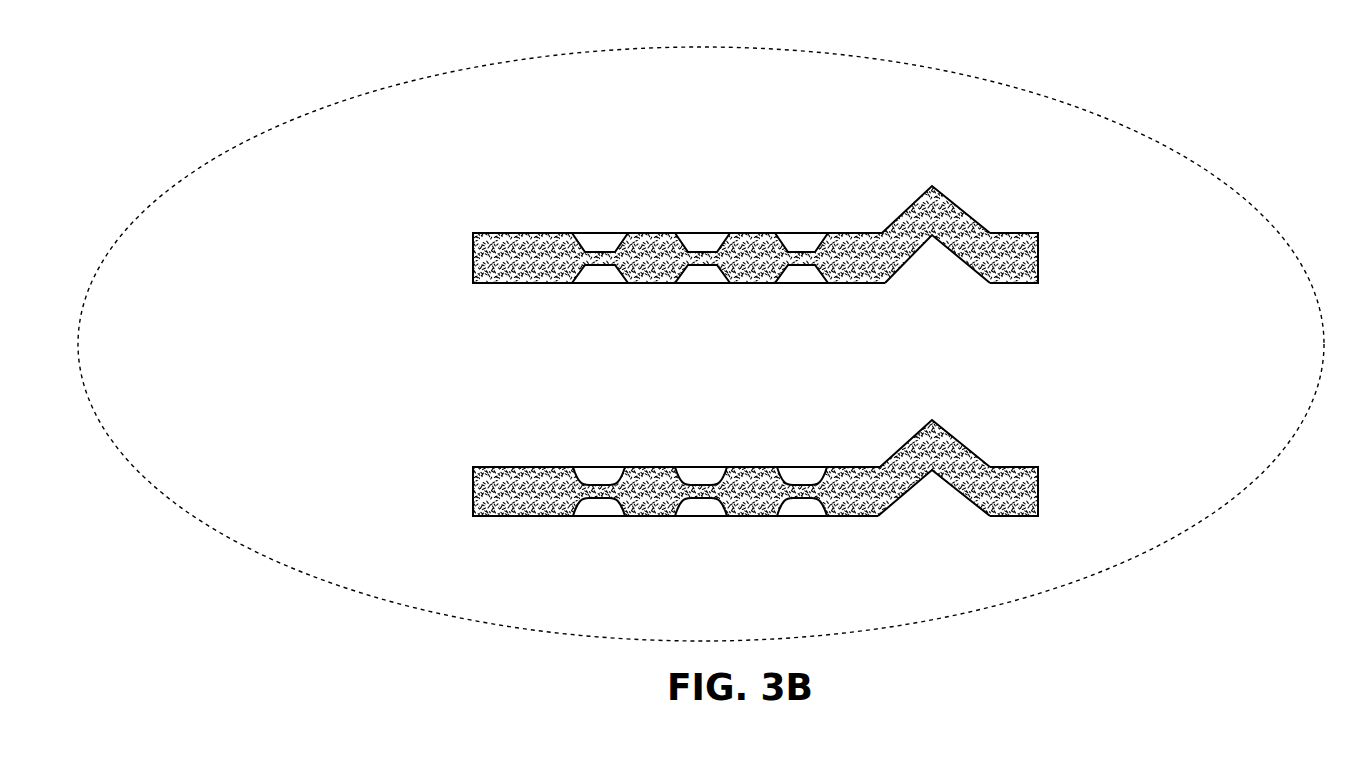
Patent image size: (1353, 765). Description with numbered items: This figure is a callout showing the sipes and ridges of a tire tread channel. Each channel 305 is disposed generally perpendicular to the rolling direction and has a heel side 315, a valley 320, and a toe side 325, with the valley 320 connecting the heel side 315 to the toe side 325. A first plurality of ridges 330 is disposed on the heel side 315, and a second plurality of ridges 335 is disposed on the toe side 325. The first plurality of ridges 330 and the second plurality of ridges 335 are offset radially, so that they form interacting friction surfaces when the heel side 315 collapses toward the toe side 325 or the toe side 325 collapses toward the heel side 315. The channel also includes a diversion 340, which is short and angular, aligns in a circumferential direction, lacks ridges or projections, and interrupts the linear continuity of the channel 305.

The channel 305 is at (678, 361).
The heel side 315 is at (707, 283).
The valley 320 is at (533, 268).
The toe side 325 is at (658, 230).
The first plurality of ridges 330 is at (592, 516).
The second plurality of ridges 335 is at (602, 468).
The diversion 340 is at (948, 170).